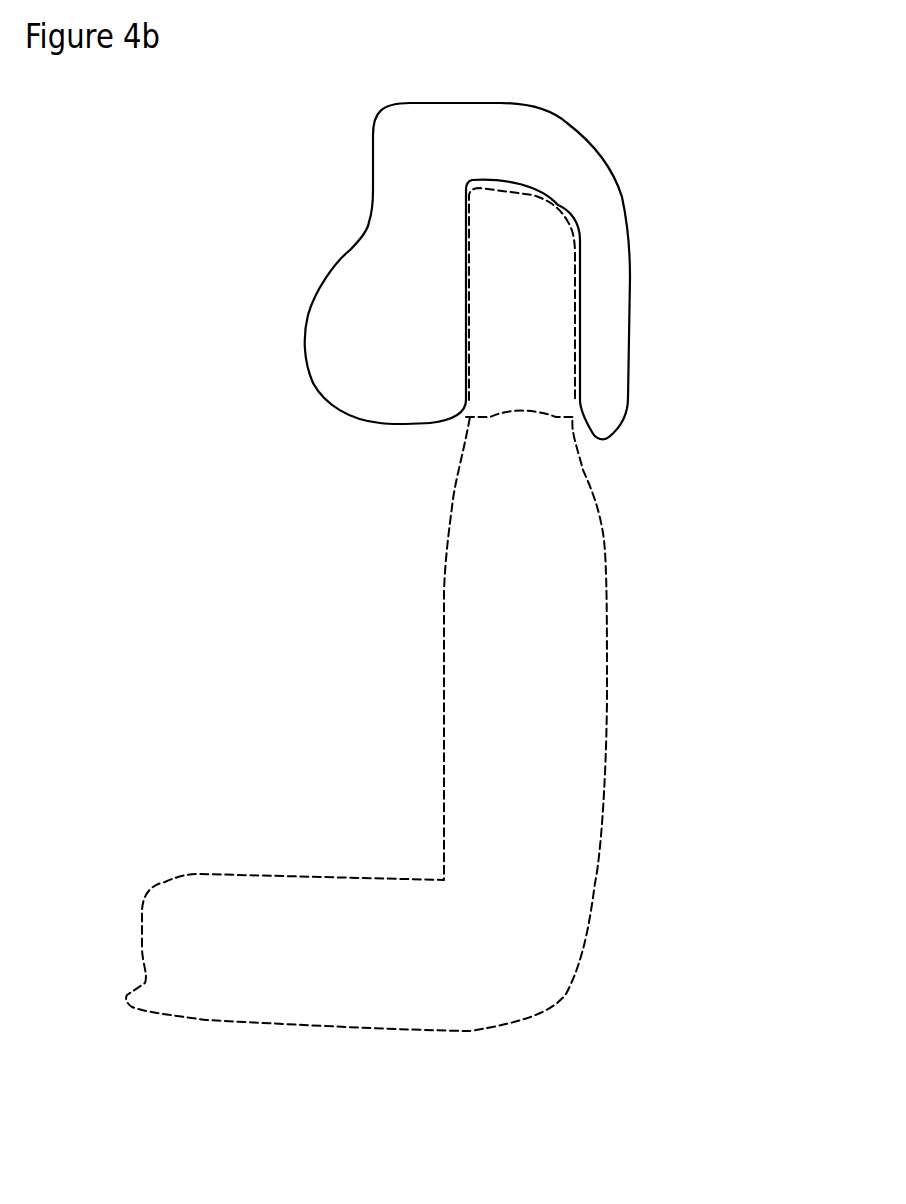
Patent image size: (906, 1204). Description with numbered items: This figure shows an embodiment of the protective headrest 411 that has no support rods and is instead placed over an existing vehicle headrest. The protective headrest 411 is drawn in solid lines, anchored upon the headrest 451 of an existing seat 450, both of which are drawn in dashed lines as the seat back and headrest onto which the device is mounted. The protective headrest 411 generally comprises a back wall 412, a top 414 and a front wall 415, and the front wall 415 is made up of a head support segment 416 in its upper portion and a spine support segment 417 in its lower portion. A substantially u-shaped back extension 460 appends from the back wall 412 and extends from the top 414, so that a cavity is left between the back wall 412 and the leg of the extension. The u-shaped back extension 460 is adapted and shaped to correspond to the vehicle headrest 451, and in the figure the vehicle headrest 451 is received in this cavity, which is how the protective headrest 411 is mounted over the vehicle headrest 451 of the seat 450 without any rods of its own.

The protective headrest 411 is at (456, 255).
The back wall 412 is at (465, 354).
The top 414 is at (457, 123).
The front wall 415 is at (340, 255).
The head support segment 416 is at (370, 220).
The spine support segment 417 is at (357, 350).
The seat 450 is at (528, 633).
The vehicle headrest 451 is at (528, 292).
The u-shaped back extension 460 is at (602, 257).